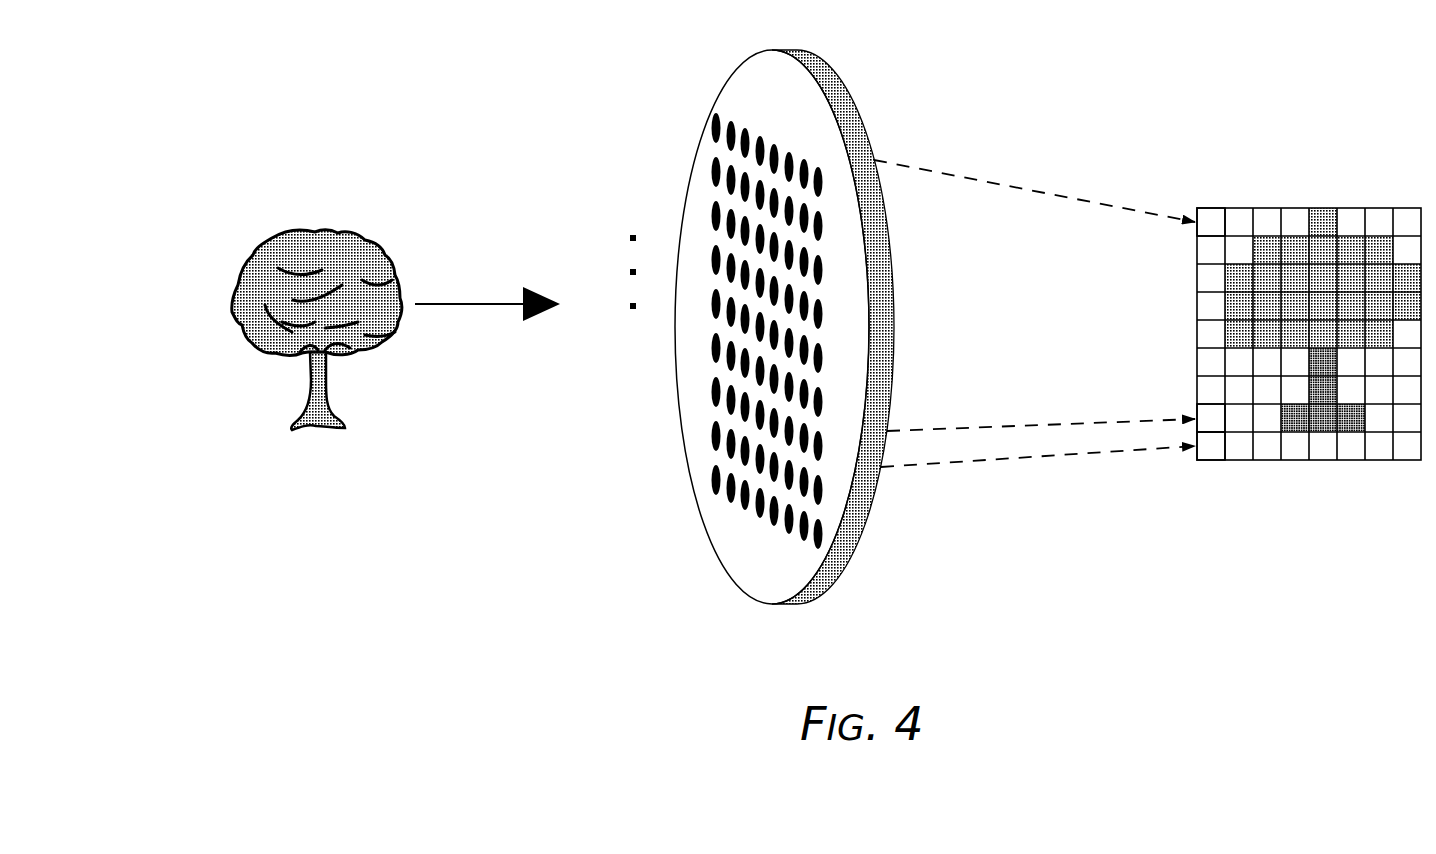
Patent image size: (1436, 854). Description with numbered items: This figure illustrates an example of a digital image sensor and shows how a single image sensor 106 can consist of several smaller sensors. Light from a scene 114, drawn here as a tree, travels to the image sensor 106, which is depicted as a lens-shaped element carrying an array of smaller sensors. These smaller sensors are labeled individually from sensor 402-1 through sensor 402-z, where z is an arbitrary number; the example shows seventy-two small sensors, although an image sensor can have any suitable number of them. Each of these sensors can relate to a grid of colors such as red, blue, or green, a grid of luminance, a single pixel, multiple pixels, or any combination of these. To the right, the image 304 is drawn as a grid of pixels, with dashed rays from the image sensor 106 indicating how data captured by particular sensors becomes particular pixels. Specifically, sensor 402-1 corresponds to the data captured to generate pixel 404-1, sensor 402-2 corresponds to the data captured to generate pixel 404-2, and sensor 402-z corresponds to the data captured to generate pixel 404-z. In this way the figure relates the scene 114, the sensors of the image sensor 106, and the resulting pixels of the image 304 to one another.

The scene 114 is at (335, 234).
The image sensor 106 is at (752, 52).
The sensor 402-z is at (712, 122).
The sensor 402-2 is at (713, 430).
The sensor 402-1 is at (713, 474).
The image 304 is at (1323, 208).
The pixel 404-z is at (1212, 216).
The pixel 404-2 is at (1205, 415).
The pixel 404-1 is at (1205, 447).